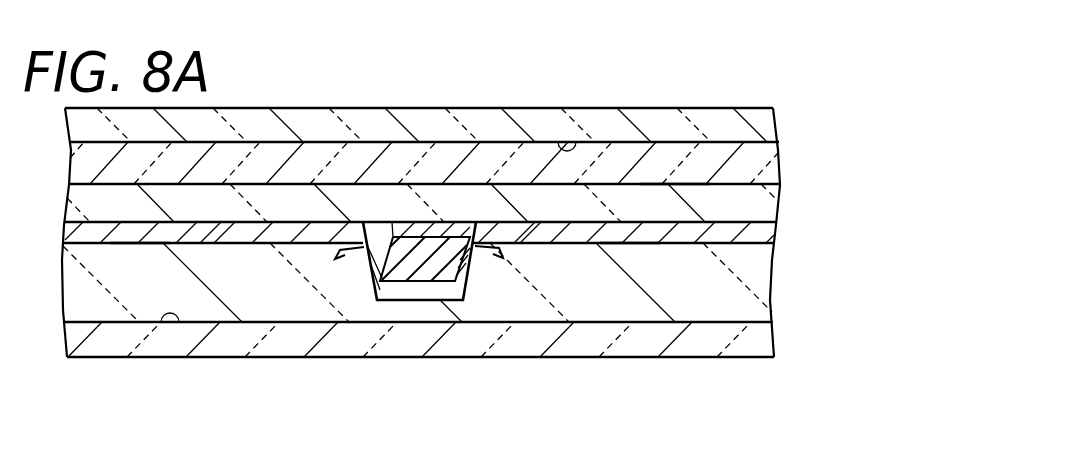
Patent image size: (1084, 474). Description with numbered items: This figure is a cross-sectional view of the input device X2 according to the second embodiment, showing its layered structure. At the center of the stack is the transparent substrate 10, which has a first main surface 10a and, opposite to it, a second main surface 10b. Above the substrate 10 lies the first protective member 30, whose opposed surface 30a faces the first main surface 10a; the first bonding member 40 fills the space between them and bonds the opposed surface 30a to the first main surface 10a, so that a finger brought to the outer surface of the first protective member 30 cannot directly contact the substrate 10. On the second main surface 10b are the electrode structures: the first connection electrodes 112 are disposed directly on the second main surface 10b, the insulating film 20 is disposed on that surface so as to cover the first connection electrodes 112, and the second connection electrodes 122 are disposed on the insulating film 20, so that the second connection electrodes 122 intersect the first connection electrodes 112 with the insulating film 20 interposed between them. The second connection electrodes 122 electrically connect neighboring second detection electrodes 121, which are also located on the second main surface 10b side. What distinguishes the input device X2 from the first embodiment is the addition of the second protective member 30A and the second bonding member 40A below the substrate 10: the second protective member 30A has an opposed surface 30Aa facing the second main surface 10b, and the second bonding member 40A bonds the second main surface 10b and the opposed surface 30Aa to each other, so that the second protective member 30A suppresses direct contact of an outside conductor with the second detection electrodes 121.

The first protective member 30 is at (758, 128).
The first bonding member 40 is at (760, 171).
The substrate 10 is at (767, 206).
The first main surface 10a is at (675, 187).
The second main surface 10b is at (139, 225).
The opposed surface 30a is at (558, 143).
The second bonding member 40A is at (753, 283).
The second protective member 30A is at (758, 344).
The opposed surface 30Aa is at (178, 323).
The insulating film 20 is at (462, 278).
The first connection electrodes 112 is at (423, 232).
The second detection electrodes 121 is at (210, 238).
The second connection electrodes 122 is at (364, 268).
The input device X2 is at (637, 36).